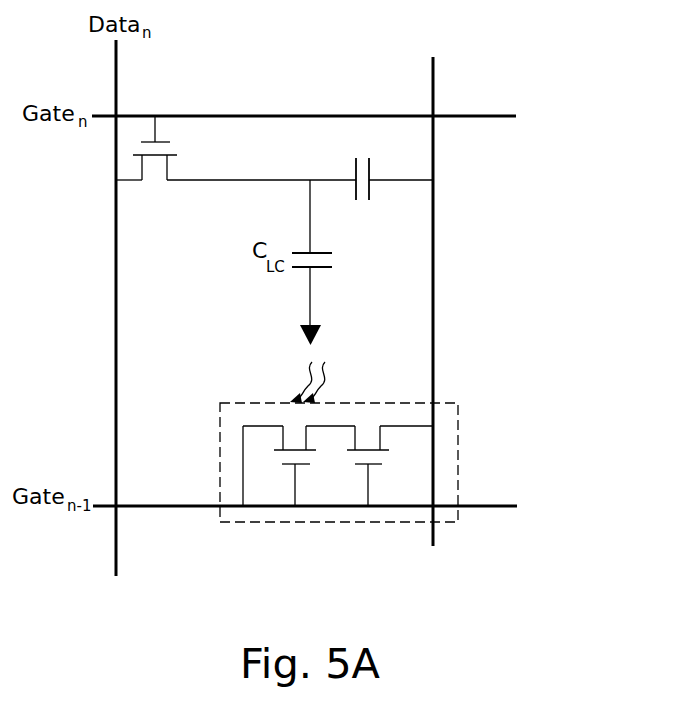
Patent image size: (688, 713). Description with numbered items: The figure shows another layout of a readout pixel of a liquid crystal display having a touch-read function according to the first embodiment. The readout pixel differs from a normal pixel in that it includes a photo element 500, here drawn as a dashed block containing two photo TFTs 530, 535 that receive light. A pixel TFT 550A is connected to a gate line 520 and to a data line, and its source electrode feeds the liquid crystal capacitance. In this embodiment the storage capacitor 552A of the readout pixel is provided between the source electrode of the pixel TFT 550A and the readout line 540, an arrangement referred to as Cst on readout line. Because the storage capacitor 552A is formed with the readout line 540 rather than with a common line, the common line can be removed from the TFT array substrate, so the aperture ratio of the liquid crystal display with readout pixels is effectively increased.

The gate line 520 is at (302, 115).
The readout line 540 is at (433, 157).
The pixel TFT 550A is at (188, 197).
The storage capacitor 552A is at (372, 262).
The photo element 500 is at (424, 491).
The photo TFT 530 is at (280, 486).
The photo TFT 535 is at (351, 486).